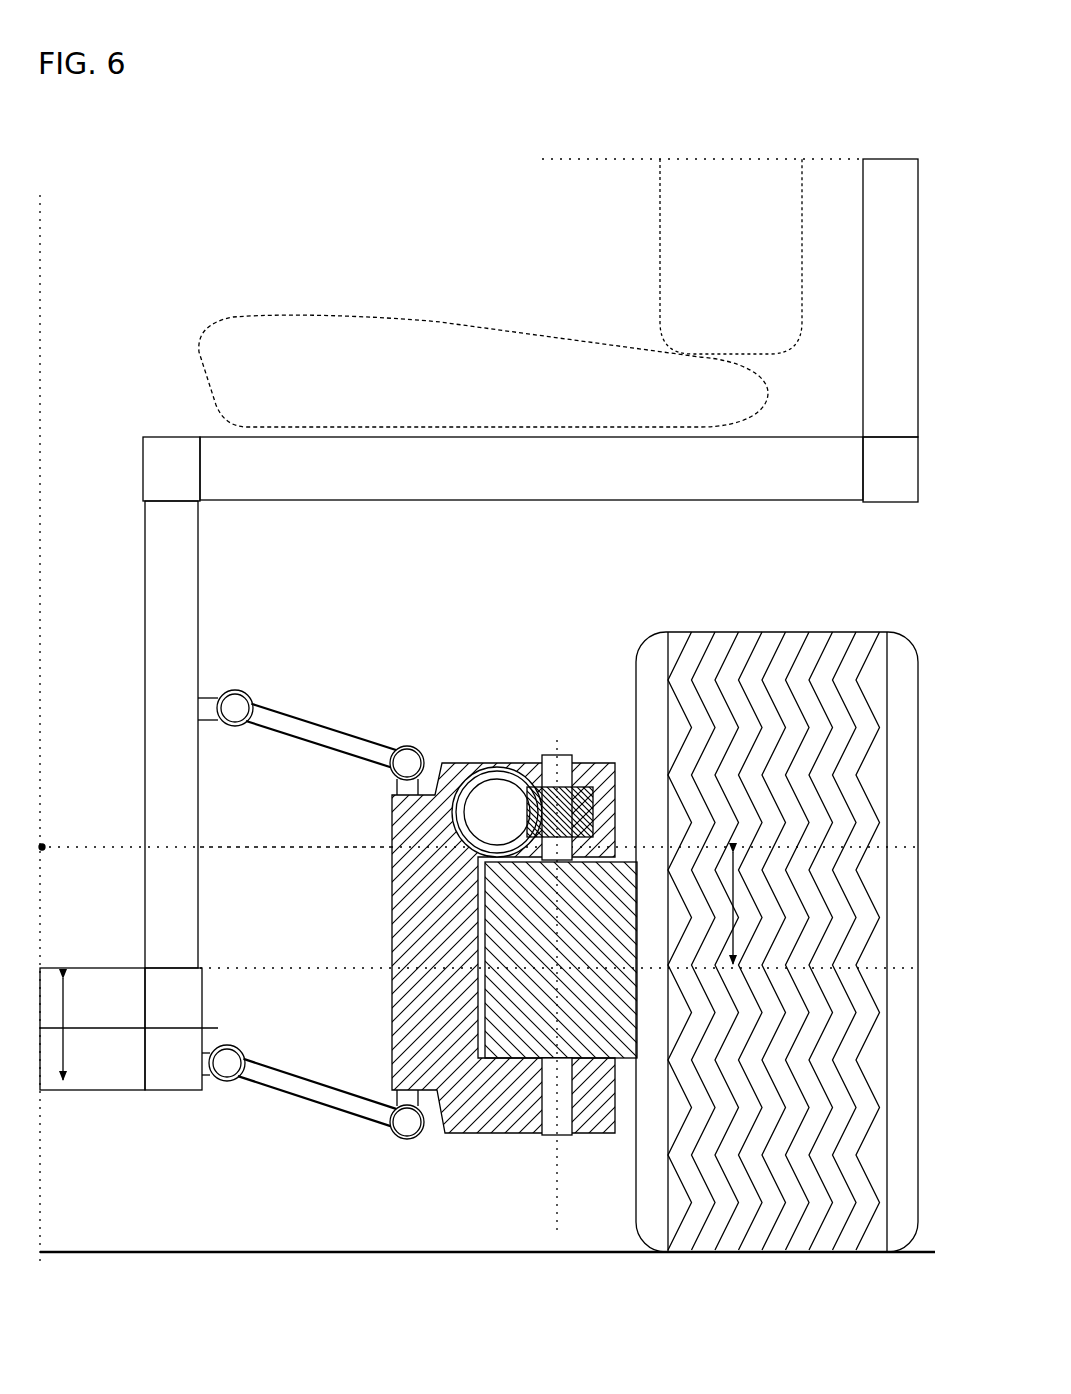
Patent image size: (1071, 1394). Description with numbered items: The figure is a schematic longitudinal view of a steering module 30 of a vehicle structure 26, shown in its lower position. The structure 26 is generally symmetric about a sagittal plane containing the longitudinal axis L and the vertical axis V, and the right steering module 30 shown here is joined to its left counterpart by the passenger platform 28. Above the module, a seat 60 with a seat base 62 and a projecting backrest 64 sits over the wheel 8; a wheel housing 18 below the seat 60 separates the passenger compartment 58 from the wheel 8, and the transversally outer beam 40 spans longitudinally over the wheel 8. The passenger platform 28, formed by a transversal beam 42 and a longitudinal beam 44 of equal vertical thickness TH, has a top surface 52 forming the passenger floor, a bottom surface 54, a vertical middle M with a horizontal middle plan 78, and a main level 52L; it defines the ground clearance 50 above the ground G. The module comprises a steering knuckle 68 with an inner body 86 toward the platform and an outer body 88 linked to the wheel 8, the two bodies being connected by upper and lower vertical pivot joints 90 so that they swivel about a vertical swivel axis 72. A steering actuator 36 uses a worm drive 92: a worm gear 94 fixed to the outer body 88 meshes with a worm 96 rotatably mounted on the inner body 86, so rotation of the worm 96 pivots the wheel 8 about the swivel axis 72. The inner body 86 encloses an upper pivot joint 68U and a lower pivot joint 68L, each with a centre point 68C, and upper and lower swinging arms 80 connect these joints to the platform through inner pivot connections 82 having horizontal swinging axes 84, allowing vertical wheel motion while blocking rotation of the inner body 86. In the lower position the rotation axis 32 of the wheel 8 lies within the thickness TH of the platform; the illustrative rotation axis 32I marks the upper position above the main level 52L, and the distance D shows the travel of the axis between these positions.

The wheel 8 is at (787, 1082).
The wheel housing 18 is at (270, 567).
The structure 26 is at (125, 472).
The passenger platform 28 is at (245, 1222).
The steering module 30 is at (331, 929).
The rotation axis 32 is at (292, 966).
The illustrative rotation axis 32I is at (243, 849).
The steering actuator 36 is at (558, 720).
The transversally outer beam 40 is at (871, 482).
The transversal beam 42 is at (93, 1011).
The longitudinal beam 44 is at (151, 1011).
The ground clearance 50 is at (113, 1222).
The top surface 52 is at (125, 966).
The main level 52L is at (85, 950).
The bottom surface 54 is at (78, 1092).
The passenger compartment 58 is at (115, 177).
The seat 60 is at (415, 223).
The seat base 62 is at (313, 381).
The backrest 64 is at (725, 269).
The steering knuckle 68 is at (358, 891).
The upper pivot joint 68U is at (407, 745).
The lower pivot joint 68L is at (395, 1135).
The centre point 68C is at (404, 768).
The vertical swivel axis 72 is at (555, 1208).
The horizontal middle plan 78 is at (127, 1092).
The swinging arms 80 is at (337, 924).
The inner pivot connections 82 is at (231, 727).
The horizontal swinging axes 84 is at (235, 690).
The inner body 86 is at (421, 927).
The outer body 88 is at (503, 927).
The vertical pivot joints 90 is at (575, 767).
The worm drive 92 is at (503, 942).
The worm gear 94 is at (537, 763).
The worm 96 is at (480, 826).
The vertical axis V is at (40, 248).
The longitudinal axis L is at (42, 845).
The vertical thickness TH is at (129, 1029).
The vertical middle M is at (165, 1042).
The distance D is at (749, 908).
The ground G is at (763, 1255).